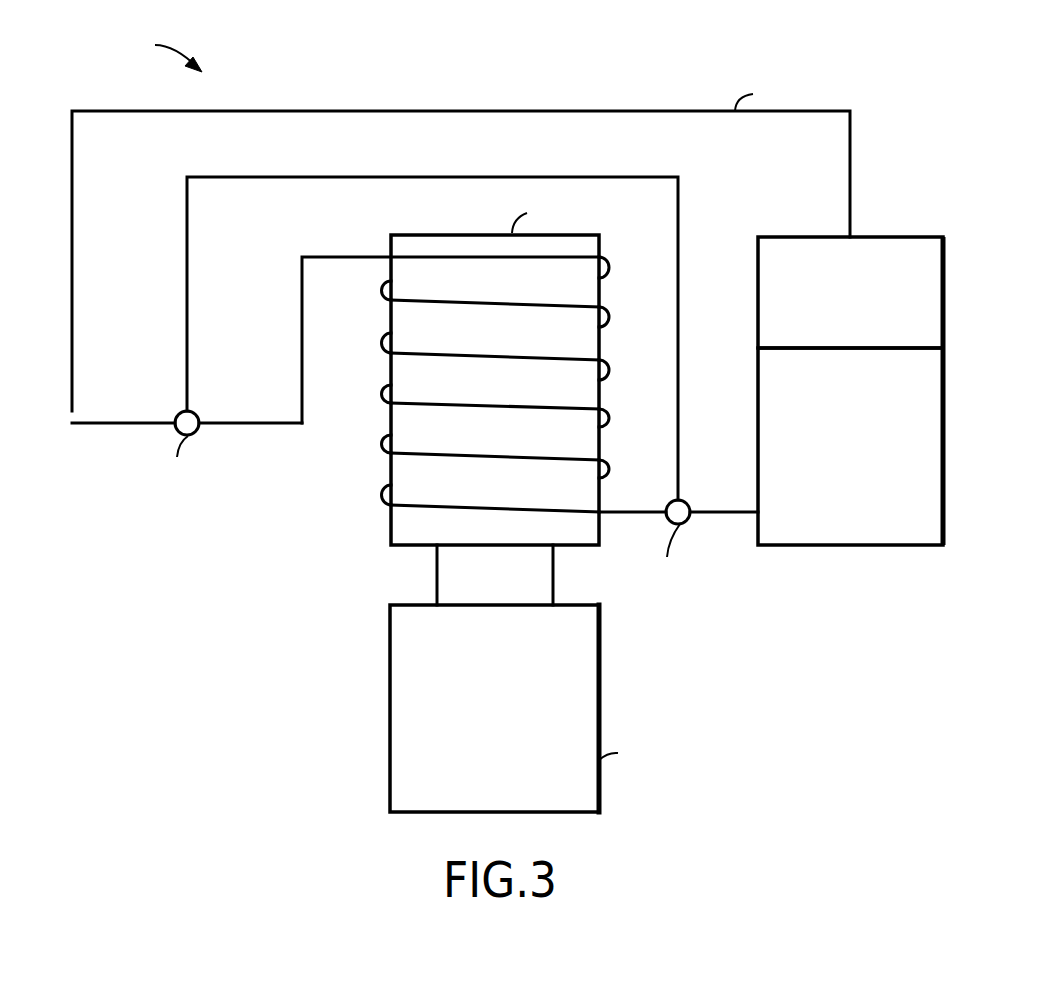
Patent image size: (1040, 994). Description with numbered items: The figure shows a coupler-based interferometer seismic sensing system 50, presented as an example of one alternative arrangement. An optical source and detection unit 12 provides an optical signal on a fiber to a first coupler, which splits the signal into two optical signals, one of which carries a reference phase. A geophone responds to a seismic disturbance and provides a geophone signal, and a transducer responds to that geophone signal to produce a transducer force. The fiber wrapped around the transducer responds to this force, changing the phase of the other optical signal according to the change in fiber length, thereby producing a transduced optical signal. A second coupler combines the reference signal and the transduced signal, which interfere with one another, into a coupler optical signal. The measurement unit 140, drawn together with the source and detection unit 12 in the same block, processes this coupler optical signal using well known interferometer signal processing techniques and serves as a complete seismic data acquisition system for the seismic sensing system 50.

The coupler-based interferometer seismic sensing system 50 is at (540, 420).
The optical source and detection unit 12 is at (933, 292).
The measurement unit 140 is at (935, 457).